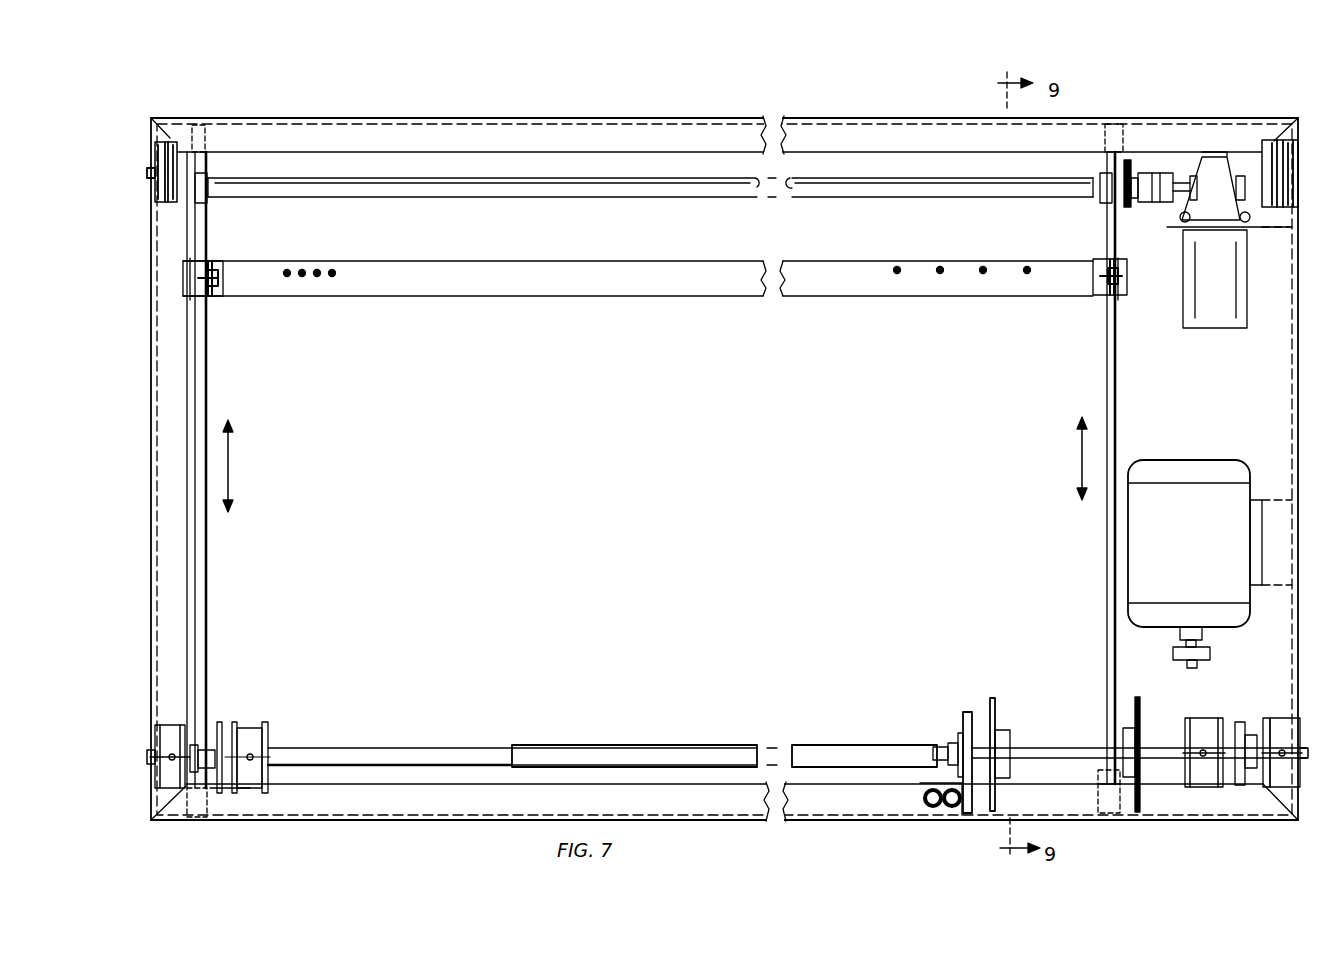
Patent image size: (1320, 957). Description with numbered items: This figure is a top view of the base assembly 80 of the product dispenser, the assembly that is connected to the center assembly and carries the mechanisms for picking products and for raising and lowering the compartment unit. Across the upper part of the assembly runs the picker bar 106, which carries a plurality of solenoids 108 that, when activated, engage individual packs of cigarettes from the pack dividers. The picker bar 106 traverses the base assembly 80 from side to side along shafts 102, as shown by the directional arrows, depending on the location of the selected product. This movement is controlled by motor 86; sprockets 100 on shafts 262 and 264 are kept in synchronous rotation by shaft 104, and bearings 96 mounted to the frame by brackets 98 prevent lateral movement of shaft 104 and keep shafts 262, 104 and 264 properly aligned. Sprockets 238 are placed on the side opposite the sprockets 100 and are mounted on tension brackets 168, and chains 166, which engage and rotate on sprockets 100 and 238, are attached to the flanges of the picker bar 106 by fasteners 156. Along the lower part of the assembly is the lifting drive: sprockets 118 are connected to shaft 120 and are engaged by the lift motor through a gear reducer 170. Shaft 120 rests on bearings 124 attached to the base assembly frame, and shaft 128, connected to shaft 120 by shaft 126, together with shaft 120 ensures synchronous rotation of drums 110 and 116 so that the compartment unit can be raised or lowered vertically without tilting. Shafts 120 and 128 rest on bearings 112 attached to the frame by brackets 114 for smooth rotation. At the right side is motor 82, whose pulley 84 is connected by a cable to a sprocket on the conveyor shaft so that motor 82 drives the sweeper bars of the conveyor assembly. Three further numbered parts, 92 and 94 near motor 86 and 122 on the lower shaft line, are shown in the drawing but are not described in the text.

The base assembly 80 is at (148, 405).
The motor 82 is at (1180, 505).
The pulley 84 is at (1175, 655).
The motor 86 is at (1205, 320).
The motor mount 92 is at (1180, 210).
The coupling 94 is at (1143, 205).
The bearings 96 is at (1119, 166).
The brackets 98 is at (1128, 172).
The sprockets 100 is at (210, 183).
The shafts 102 is at (202, 390).
The shaft 104 is at (670, 197).
The picker bar 106 is at (845, 290).
The solenoids 108 is at (336, 270).
The drums 110 is at (168, 730).
The bearings 112 is at (208, 747).
The brackets 114 is at (235, 725).
The drums 116 is at (253, 737).
The sprockets 118 is at (1000, 735).
The shaft 120 is at (1030, 746).
The sprocket 122 is at (957, 742).
The bearings 124 is at (940, 748).
The shaft 126 is at (578, 755).
The shaft 128 is at (398, 752).
The fasteners 156 is at (222, 285).
The chains 166 is at (222, 268).
The tension brackets 168 is at (195, 822).
The gear reducer 170 is at (208, 132).
The sprockets 238 is at (215, 812).
The shaft 262 is at (1113, 233).
The shaft 264 is at (212, 200).